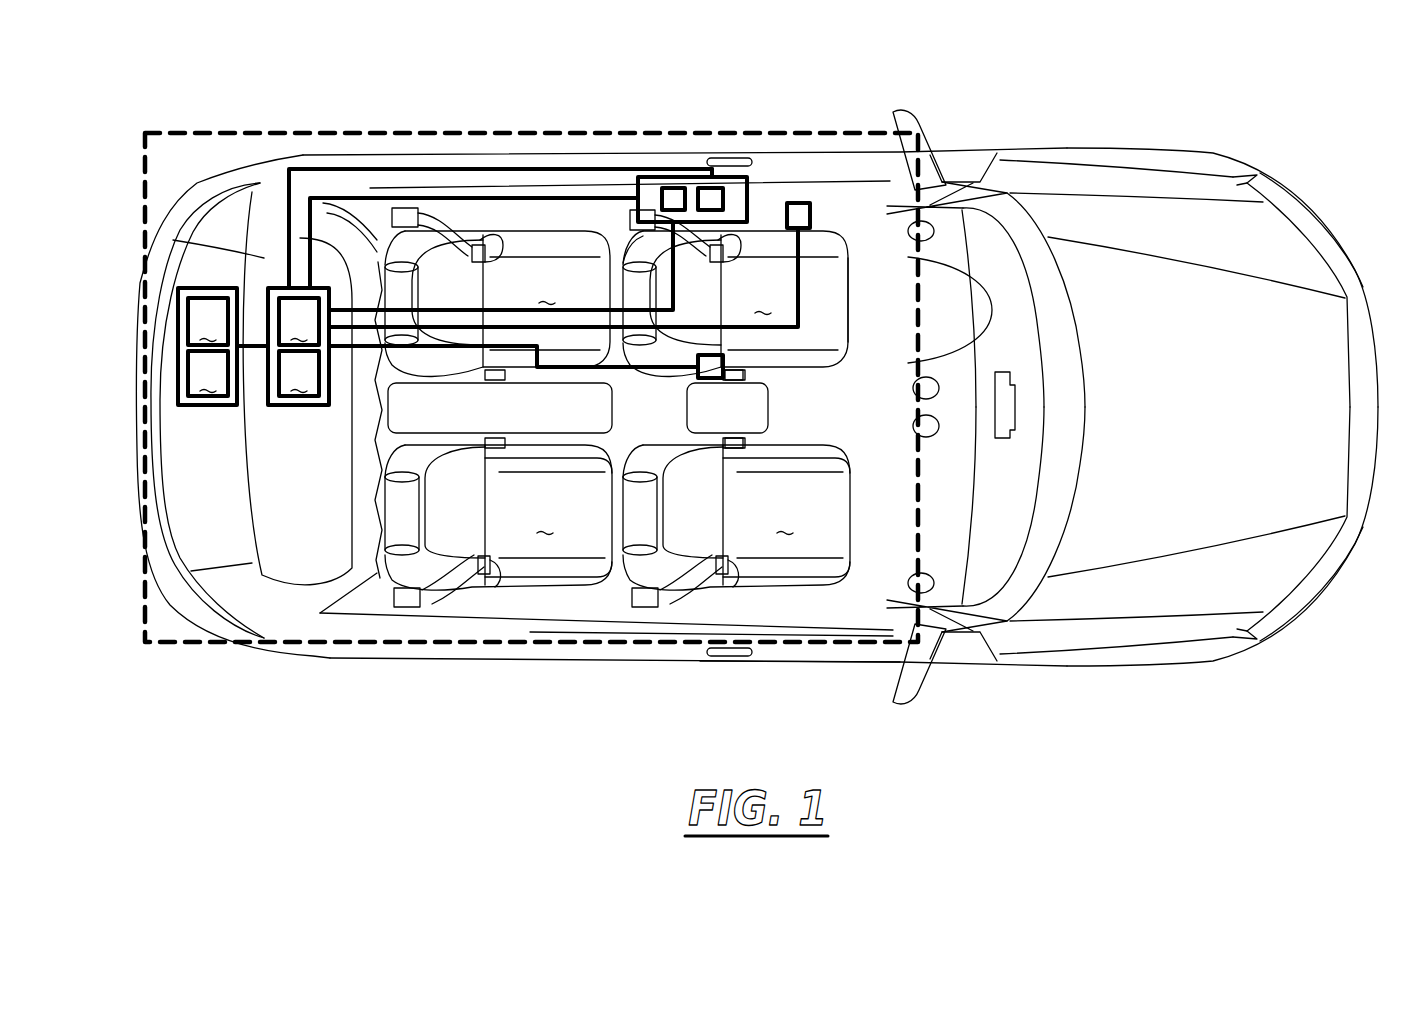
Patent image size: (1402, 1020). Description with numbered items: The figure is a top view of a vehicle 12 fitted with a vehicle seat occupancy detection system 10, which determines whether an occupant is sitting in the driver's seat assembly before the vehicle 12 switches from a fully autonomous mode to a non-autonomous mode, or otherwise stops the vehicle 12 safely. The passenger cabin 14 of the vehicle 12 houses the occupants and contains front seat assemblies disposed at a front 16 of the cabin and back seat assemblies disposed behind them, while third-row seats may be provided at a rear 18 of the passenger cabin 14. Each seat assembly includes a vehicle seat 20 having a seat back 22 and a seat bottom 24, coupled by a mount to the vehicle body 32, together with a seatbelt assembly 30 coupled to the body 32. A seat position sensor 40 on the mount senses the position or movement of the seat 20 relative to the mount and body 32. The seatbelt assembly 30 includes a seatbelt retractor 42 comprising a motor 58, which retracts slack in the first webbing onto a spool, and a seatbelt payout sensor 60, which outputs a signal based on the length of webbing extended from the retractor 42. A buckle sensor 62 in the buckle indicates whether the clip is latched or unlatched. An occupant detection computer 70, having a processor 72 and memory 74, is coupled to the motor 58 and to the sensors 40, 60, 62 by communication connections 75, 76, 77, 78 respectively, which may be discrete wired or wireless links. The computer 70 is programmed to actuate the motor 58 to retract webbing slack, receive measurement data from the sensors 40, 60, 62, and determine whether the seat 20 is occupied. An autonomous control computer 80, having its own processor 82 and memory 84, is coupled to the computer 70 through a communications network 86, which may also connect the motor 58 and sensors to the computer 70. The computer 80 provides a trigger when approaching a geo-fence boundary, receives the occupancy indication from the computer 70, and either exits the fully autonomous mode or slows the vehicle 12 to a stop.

The vehicle seat occupancy detection system 10 is at (531, 336).
The vehicle 12 is at (757, 407).
The passenger cabin 14 is at (606, 359).
The front of the cabin 16 is at (968, 369).
The rear of the passenger cabin 18 is at (552, 331).
The vehicle seat 20 is at (617, 410).
The seat back 22 is at (611, 232).
The seat bottom 24 is at (869, 295).
The seatbelt assembly 30 is at (685, 264).
The vehicle body 32 is at (800, 695).
The seat position sensor 40 is at (833, 144).
The seatbelt retractor 42 is at (767, 148).
The motor 58 is at (736, 115).
The seatbelt payout sensor 60 is at (692, 147).
The buckle sensor 62 is at (727, 401).
The occupant detection computer 70 is at (298, 385).
The processor 72 is at (299, 321).
The memory 74 is at (299, 373).
The communication connection 75 is at (500, 171).
The communication connection 76 is at (587, 277).
The communication connection 77 is at (474, 189).
The communication connection 78 is at (513, 383).
The autonomous control computer 80 is at (207, 385).
The processor 82 is at (208, 321).
The memory 84 is at (208, 373).
The communications network 86 is at (180, 243).